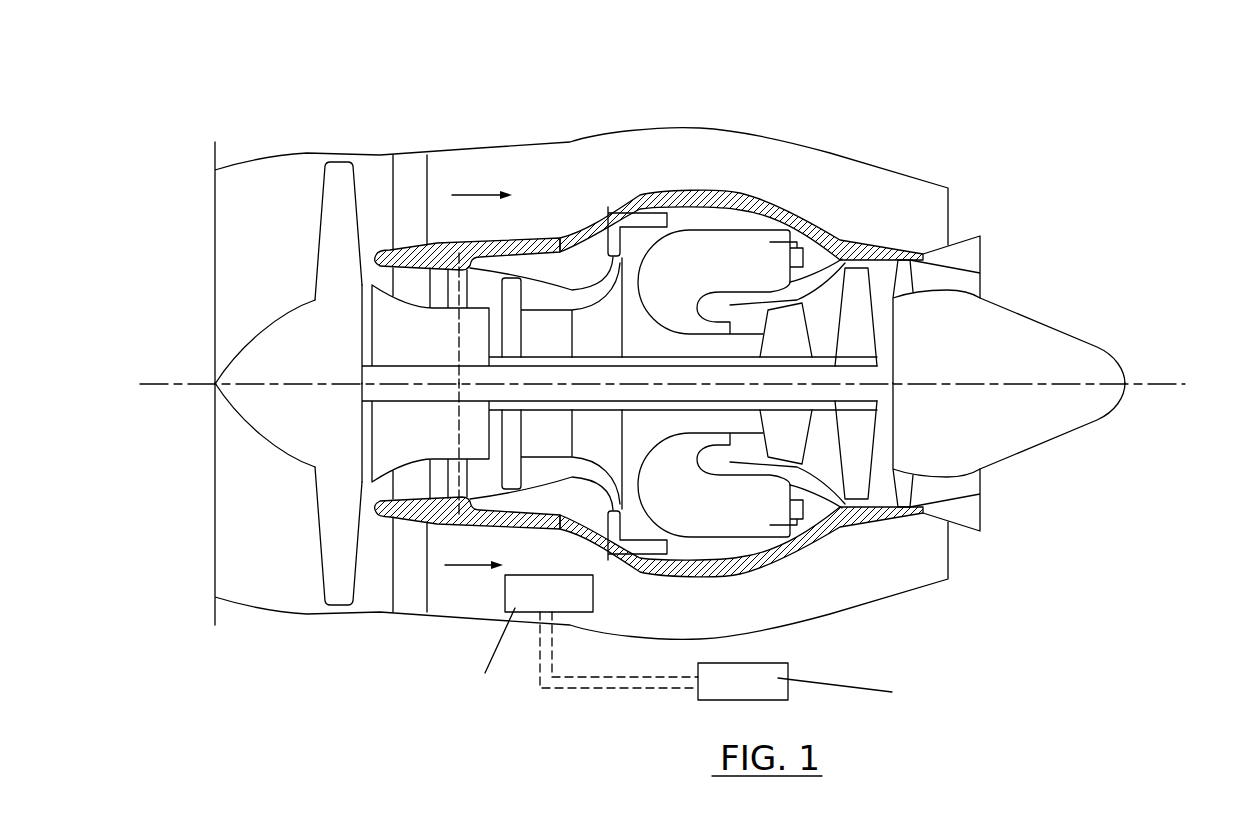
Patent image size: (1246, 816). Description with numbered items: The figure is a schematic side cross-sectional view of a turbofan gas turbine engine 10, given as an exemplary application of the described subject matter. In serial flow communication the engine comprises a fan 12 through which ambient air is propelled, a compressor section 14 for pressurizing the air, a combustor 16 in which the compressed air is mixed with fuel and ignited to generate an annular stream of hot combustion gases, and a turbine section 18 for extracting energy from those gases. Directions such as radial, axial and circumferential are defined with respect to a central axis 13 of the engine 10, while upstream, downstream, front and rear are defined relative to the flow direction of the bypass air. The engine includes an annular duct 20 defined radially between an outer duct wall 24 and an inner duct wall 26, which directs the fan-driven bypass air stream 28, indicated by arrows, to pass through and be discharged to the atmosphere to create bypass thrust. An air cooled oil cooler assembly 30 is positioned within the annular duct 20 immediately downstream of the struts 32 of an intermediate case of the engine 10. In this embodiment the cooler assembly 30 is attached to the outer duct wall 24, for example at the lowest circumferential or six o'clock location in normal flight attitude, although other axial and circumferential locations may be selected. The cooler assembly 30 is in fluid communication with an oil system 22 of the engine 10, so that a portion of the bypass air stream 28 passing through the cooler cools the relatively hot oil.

The turbofan gas turbine engine 10 is at (864, 119).
The fan 12 is at (318, 210).
The central axis 13 is at (1147, 383).
The compressor section 14 is at (570, 293).
The combustor 16 is at (755, 228).
The turbine section 18 is at (827, 433).
The annular duct 20 is at (604, 195).
The oil system 22 is at (755, 697).
The outer duct wall 24 is at (523, 143).
The inner duct wall 26 is at (655, 230).
The bypass air stream 28 is at (468, 195).
The cooler assembly 30 is at (562, 608).
The struts 32 is at (409, 170).